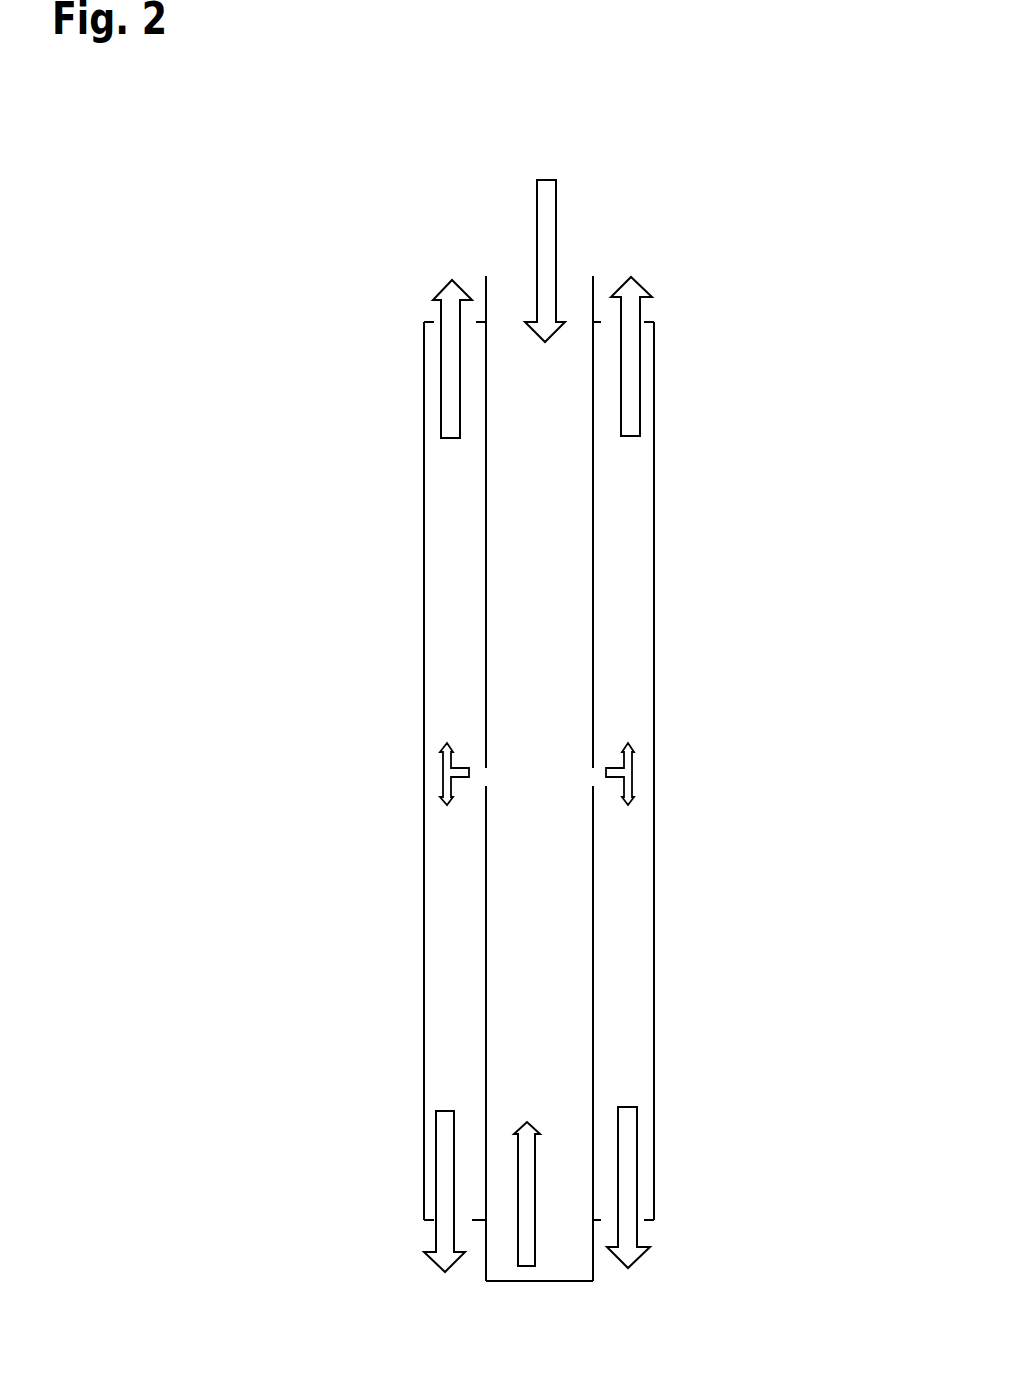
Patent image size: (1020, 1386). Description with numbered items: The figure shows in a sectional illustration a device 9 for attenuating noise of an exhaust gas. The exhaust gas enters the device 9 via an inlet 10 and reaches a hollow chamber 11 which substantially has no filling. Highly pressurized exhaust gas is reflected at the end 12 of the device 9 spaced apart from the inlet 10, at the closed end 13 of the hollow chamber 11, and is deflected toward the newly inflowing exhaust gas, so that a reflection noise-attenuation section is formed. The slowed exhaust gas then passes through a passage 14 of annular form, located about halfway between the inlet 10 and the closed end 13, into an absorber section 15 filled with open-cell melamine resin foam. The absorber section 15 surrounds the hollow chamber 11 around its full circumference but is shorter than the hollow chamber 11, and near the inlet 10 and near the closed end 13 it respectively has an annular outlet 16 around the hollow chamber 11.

The device 9 is at (650, 573).
The inlet 10 is at (484, 294).
The hollow chamber 11 is at (520, 698).
The end 12 is at (570, 1256).
The closed end 13 is at (516, 1277).
The passage 14 is at (550, 776).
The absorber section 15 is at (462, 955).
The outlet 16 is at (607, 340).